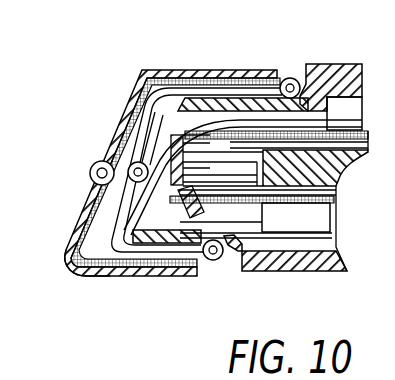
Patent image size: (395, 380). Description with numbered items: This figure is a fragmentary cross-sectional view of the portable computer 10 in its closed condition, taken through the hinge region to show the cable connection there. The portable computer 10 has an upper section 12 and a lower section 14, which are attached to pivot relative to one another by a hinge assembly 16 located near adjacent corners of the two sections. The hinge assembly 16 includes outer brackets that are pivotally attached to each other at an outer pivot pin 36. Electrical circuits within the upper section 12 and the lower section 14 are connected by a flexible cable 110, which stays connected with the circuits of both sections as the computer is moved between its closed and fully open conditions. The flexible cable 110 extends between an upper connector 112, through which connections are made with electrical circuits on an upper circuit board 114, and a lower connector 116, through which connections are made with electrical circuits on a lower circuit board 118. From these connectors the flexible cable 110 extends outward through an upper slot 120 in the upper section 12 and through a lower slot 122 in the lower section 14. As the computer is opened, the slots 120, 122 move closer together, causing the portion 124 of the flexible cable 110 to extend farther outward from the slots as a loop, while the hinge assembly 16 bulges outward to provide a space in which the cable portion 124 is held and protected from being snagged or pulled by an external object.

The portable computer 10 is at (133, 338).
The upper section 12 is at (328, 60).
The lower section 14 is at (275, 278).
The hinge assembly 16 is at (145, 71).
The outer pivot pin 36 is at (93, 171).
The flexible cable 110 is at (124, 134).
The upper connector 112 is at (362, 94).
The upper circuit board 114 is at (212, 104).
The lower connector 116 is at (273, 235).
The lower circuit board 118 is at (170, 205).
The upper slot 120 is at (166, 112).
The lower slot 122 is at (118, 227).
The portion of the flexible cable 124 is at (92, 205).